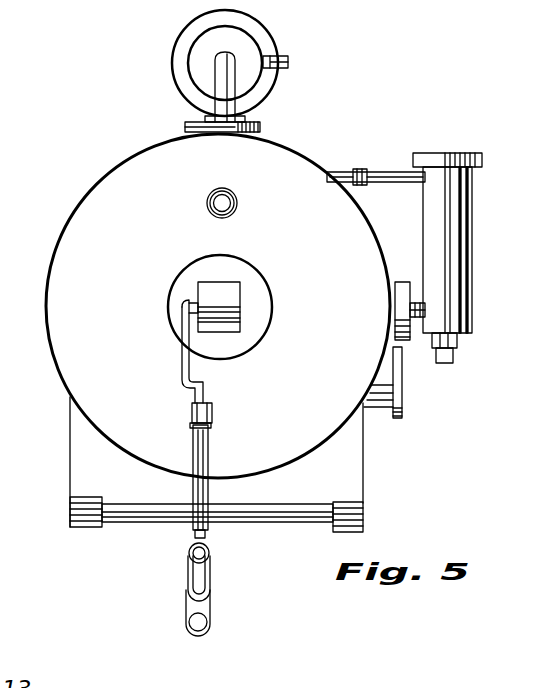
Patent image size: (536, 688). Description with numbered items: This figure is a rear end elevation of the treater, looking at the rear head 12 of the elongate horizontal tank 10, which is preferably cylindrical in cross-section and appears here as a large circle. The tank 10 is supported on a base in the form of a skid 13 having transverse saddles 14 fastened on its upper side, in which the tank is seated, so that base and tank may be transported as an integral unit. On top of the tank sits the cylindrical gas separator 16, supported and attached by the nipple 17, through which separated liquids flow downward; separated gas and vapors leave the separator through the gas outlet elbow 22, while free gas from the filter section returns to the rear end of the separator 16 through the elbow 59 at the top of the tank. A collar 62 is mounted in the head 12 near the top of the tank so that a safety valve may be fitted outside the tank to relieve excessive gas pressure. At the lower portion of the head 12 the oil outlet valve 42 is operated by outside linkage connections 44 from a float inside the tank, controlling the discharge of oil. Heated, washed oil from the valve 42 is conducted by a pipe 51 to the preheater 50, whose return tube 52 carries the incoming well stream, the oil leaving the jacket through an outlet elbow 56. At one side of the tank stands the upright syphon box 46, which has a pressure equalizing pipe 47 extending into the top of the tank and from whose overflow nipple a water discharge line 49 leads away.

The tank 10 is at (118, 166).
The head 12 is at (110, 218).
The skid 13 is at (75, 527).
The saddles 14 is at (92, 440).
The gas separator 16 is at (225, 28).
The nipple 17 is at (190, 121).
The gas outlet elbow 22 is at (290, 63).
The outlet valve 42 is at (207, 418).
The linkage connections 44 is at (182, 372).
The syphon box 46 is at (432, 262).
The pressure equalizing pipe 47 is at (370, 172).
The water discharge line 49 is at (450, 364).
The preheater 50 is at (210, 552).
The pipe 51 is at (210, 498).
The return tube 52 is at (210, 574).
The outlet elbow 56 is at (212, 625).
The elbow 59 is at (215, 80).
The collar 62 is at (207, 203).